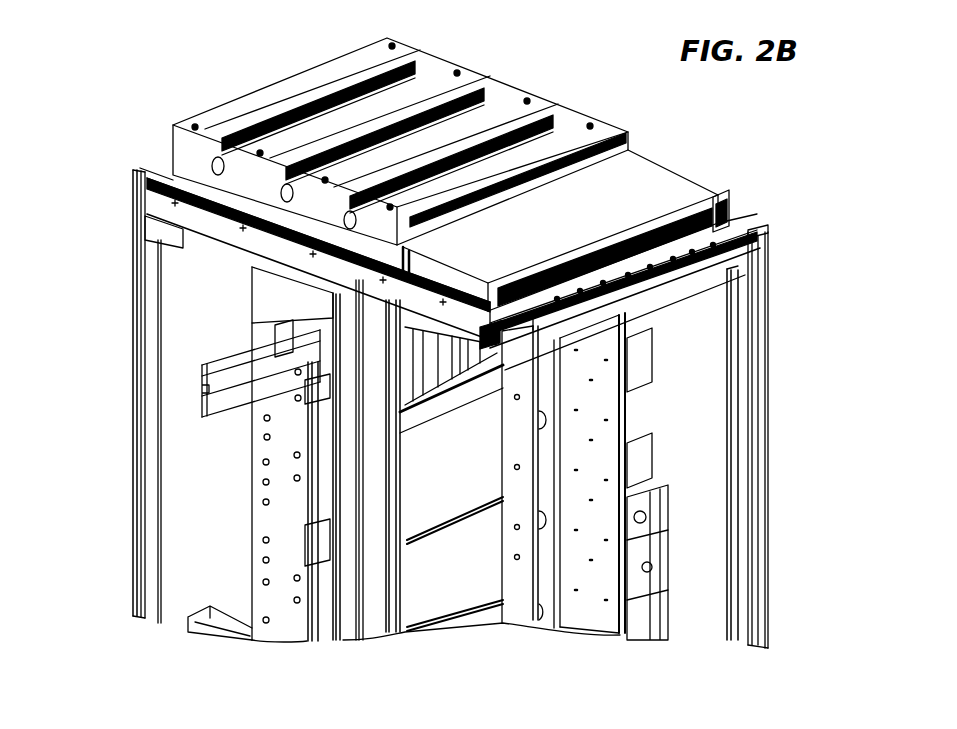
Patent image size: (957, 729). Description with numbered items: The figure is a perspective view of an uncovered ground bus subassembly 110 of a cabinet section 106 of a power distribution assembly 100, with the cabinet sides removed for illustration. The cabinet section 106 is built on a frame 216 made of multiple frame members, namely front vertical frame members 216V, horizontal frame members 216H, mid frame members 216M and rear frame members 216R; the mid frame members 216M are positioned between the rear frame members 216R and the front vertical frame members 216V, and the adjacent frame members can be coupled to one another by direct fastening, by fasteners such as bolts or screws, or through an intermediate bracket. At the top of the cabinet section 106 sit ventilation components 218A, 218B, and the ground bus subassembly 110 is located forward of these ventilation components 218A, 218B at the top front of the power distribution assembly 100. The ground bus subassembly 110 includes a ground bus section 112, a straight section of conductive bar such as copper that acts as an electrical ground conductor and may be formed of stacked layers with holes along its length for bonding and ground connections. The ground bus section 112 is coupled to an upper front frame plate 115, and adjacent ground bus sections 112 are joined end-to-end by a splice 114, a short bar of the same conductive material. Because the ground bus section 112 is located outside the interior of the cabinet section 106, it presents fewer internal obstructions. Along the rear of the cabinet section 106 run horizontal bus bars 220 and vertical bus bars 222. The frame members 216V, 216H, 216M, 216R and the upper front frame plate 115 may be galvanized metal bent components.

The power distribution assembly 100 is at (274, 55).
The cabinet section 106 is at (669, 664).
The ground bus subassembly 110 is at (760, 220).
The ground bus section 112 is at (682, 250).
The splice 114 is at (480, 334).
The upper front frame plate 115 is at (679, 303).
The frame 216 is at (770, 312).
The horizontal frame member 216H is at (208, 244).
The mid frame member 216M is at (392, 563).
The rear frame member 216R is at (133, 546).
The front vertical frame member 216V is at (766, 452).
The ventilation component 218A is at (656, 160).
The ventilation component 218B is at (452, 58).
The horizontal bus bar 220 is at (206, 432).
The vertical bus bar 222 is at (252, 528).